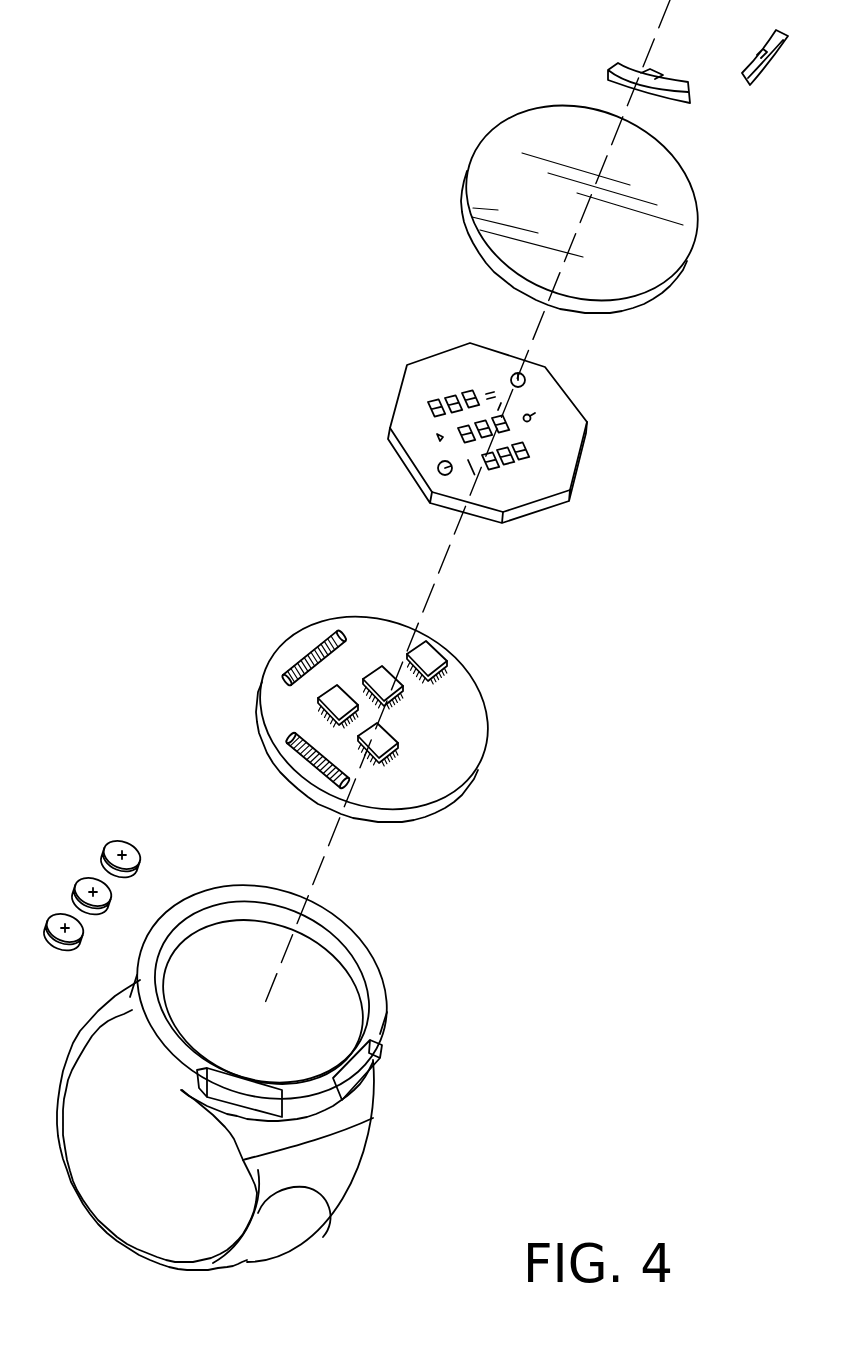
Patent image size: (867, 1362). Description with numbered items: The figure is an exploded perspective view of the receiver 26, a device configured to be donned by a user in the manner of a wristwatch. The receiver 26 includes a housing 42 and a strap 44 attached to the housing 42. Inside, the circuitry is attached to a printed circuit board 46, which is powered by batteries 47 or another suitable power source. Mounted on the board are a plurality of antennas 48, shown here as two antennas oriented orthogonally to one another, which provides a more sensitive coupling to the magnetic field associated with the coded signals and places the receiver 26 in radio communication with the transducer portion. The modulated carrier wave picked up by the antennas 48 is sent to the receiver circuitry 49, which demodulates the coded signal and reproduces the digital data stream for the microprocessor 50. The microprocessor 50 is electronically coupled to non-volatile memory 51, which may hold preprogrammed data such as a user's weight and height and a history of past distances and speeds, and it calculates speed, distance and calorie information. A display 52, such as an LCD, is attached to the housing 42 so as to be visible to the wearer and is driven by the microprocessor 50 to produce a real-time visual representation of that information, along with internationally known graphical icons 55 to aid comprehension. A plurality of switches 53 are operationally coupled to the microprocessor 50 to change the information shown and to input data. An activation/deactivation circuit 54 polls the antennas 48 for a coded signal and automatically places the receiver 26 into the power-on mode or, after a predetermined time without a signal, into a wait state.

The receiver 26 is at (173, 184).
The housing 42 is at (372, 968).
The strap 44 is at (358, 1148).
The printed circuit board 46 is at (367, 628).
The batteries 47 is at (55, 917).
The antennas 48 is at (310, 736).
The receiver circuitry 49 is at (343, 697).
The microprocessor 50 is at (392, 733).
The non-volatile memory 51 is at (392, 687).
The display 52 is at (418, 372).
The switches 53 is at (683, 103).
The activation/deactivation circuit 54 is at (430, 650).
The graphical icons 55 is at (527, 416).